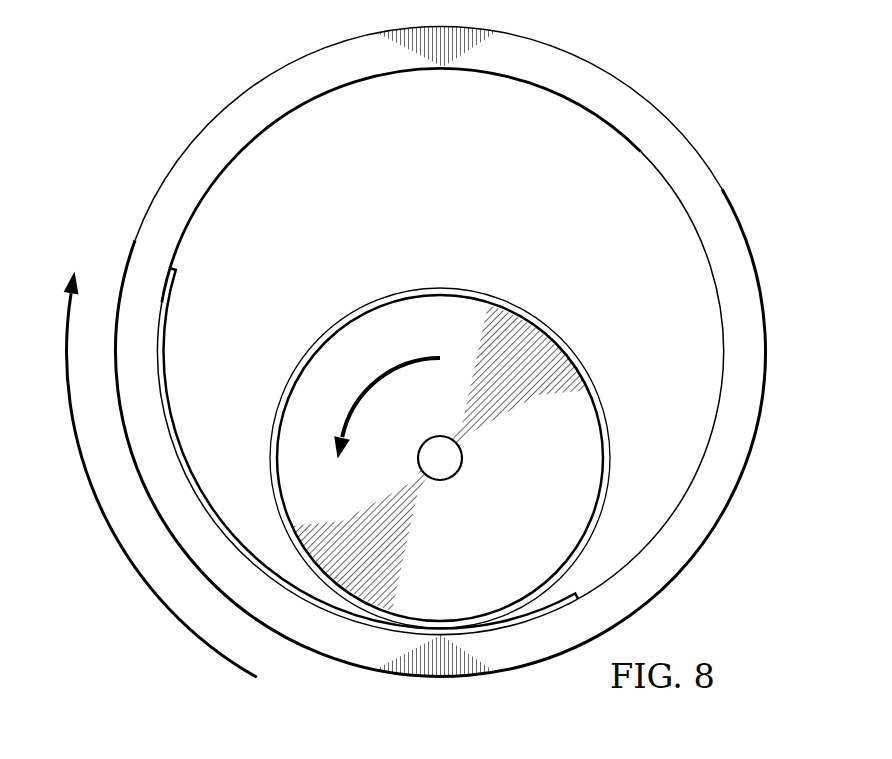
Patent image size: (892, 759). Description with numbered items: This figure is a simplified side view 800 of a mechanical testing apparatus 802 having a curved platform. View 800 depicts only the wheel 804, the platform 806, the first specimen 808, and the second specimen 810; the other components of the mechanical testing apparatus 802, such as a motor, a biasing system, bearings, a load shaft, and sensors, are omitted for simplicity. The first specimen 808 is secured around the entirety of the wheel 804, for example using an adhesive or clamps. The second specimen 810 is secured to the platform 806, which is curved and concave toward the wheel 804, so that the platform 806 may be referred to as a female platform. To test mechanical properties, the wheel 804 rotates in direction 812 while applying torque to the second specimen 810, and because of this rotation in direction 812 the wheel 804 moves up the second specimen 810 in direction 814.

The view 800 is at (94, 72).
The mechanical testing apparatus 802 is at (129, 151).
The wheel 804 is at (603, 455).
The platform 806 is at (763, 347).
The first specimen 808 is at (272, 457).
The second specimen 810 is at (170, 352).
The direction 812 is at (358, 392).
The direction 814 is at (103, 514).